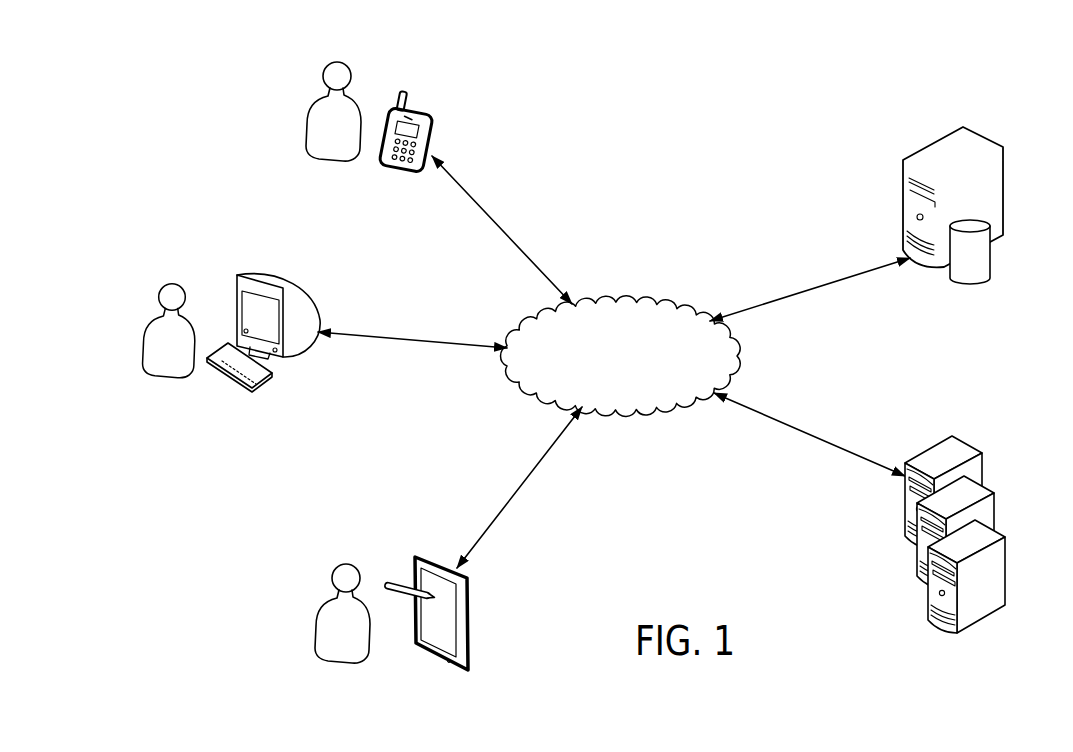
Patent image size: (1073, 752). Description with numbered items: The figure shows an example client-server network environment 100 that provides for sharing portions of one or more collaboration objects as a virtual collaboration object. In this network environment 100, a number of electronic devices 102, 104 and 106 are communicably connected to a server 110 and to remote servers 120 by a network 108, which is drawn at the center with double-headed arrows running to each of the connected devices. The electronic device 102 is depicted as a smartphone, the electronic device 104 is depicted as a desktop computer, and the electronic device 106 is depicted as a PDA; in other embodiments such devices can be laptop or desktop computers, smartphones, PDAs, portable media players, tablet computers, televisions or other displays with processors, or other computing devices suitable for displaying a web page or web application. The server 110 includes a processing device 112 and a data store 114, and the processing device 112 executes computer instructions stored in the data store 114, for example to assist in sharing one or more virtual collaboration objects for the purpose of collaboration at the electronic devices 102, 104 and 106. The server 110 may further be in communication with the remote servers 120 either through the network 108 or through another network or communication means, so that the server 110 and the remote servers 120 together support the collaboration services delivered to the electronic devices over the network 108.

The network environment 100 is at (717, 99).
The electronic device 102 is at (417, 110).
The electronic device 104 is at (288, 284).
The electronic device 106 is at (423, 550).
The network 108 is at (625, 301).
The server 110 is at (903, 283).
The processing device 112 is at (983, 134).
The data store 114 is at (993, 268).
The remote servers 120 is at (903, 603).